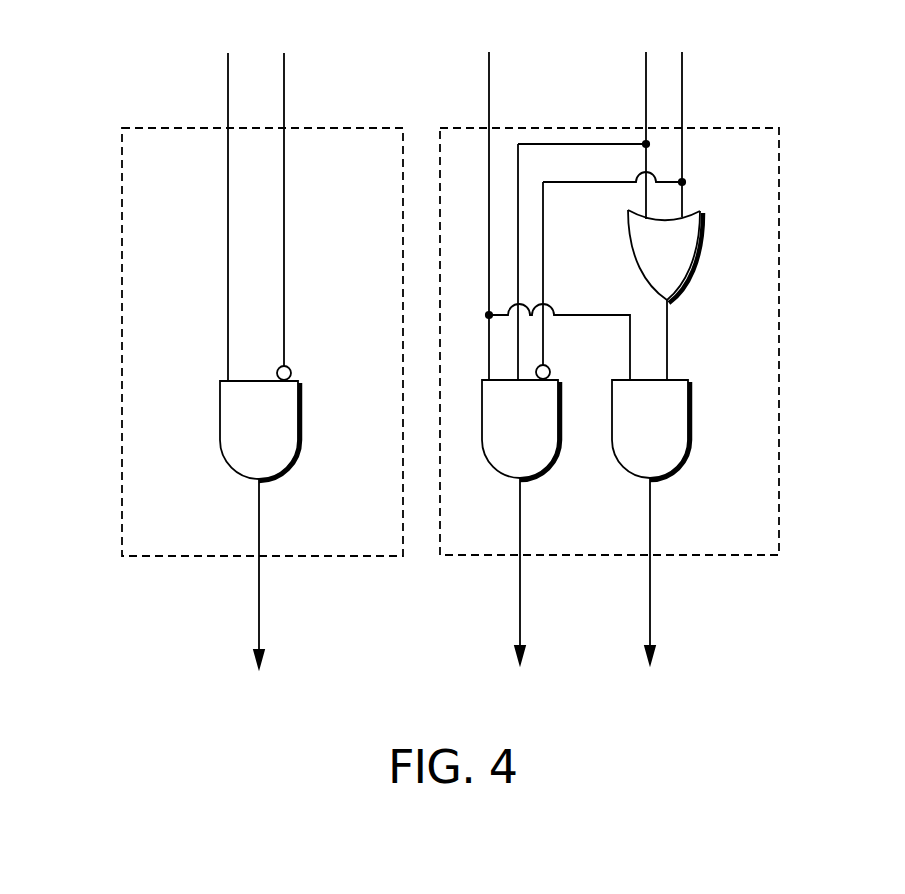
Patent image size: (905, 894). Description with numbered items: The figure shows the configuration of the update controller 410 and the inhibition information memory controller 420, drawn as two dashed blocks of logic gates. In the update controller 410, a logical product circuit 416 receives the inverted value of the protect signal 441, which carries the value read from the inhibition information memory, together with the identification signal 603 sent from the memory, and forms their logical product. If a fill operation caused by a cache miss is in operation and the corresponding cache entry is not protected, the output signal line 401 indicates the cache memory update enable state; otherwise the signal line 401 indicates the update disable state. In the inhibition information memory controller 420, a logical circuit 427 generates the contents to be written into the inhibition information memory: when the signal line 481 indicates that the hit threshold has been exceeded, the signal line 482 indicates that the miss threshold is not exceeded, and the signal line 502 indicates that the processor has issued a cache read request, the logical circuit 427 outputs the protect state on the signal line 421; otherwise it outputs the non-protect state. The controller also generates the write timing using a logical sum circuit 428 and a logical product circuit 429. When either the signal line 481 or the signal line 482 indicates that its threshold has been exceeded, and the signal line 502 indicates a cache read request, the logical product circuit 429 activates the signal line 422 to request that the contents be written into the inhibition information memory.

The update controller 410 is at (120, 318).
The inhibition information memory controller 420 is at (779, 315).
The identification signal 603 is at (228, 98).
The protect signal 441 is at (284, 98).
The logical product circuit 416 is at (302, 425).
The signal line 401 is at (261, 603).
The signal line 502 is at (489, 57).
The signal line 481 is at (646, 98).
The signal line 482 is at (682, 83).
The logical sum circuit 428 is at (695, 282).
The logical circuit 427 is at (565, 465).
The logical product circuit 429 is at (693, 465).
The signal line 421 is at (522, 603).
The signal line 422 is at (652, 603).